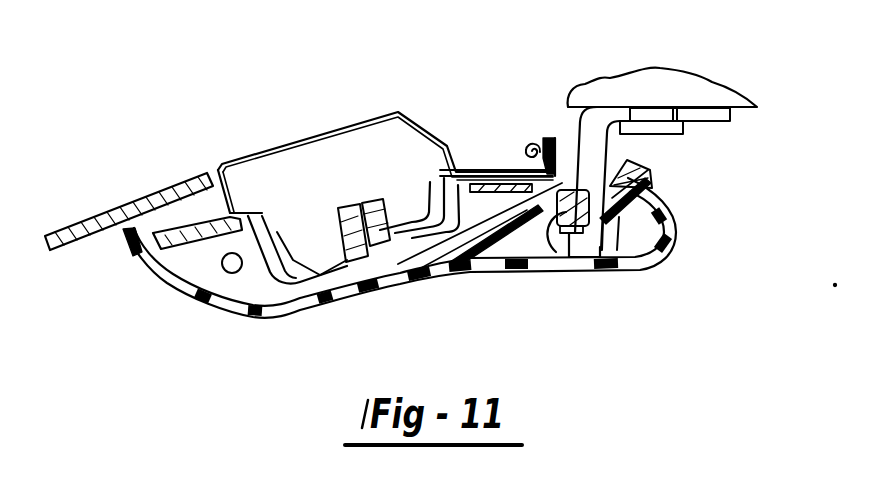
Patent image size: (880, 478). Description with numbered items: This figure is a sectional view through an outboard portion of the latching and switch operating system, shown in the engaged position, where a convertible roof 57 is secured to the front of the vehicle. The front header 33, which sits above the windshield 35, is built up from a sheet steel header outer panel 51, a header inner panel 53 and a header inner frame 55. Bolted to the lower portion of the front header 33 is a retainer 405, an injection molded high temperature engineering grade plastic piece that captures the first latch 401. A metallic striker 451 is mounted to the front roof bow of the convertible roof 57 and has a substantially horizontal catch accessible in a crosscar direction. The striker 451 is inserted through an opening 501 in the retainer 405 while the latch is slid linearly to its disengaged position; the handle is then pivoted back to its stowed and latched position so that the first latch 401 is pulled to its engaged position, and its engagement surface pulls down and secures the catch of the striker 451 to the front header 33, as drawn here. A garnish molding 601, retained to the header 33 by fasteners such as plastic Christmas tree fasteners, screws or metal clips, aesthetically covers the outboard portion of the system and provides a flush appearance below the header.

The front header 33 is at (444, 112).
The windshield 35 is at (123, 203).
The header outer panel 51 is at (307, 134).
The header inner panel 53 is at (268, 214).
The header inner frame 55 is at (263, 272).
The convertible roof 57 is at (612, 93).
The first latch 401 is at (543, 247).
The retainer 405 is at (455, 278).
The striker 451 is at (590, 134).
The opening 501 is at (651, 169).
The garnish molding 601 is at (282, 311).